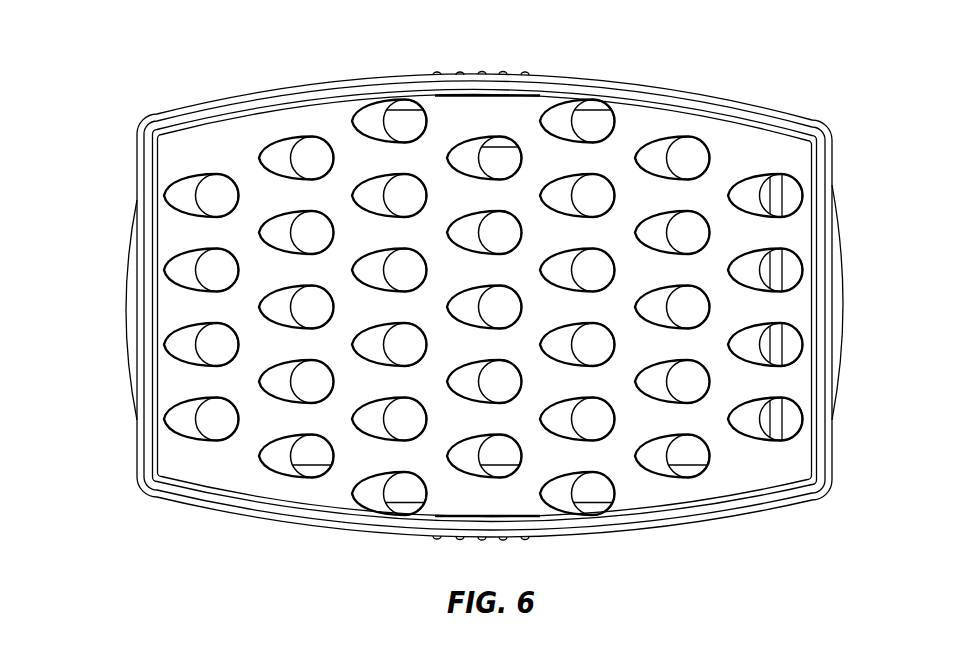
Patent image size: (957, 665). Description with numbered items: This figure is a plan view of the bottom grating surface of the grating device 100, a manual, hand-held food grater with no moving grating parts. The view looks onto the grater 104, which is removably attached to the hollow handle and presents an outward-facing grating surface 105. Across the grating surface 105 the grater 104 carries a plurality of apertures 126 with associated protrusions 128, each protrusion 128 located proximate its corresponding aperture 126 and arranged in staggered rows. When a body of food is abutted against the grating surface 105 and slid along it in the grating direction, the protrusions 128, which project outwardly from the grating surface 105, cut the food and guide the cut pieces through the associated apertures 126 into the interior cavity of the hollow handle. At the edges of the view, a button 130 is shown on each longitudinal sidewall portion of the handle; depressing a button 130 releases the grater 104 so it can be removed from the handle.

The grating device 100 is at (202, 49).
The grater 104 is at (640, 123).
The grating surface 105 is at (752, 139).
The aperture 126 is at (217, 432).
The protrusion 128 is at (178, 269).
The button 130 is at (513, 83).